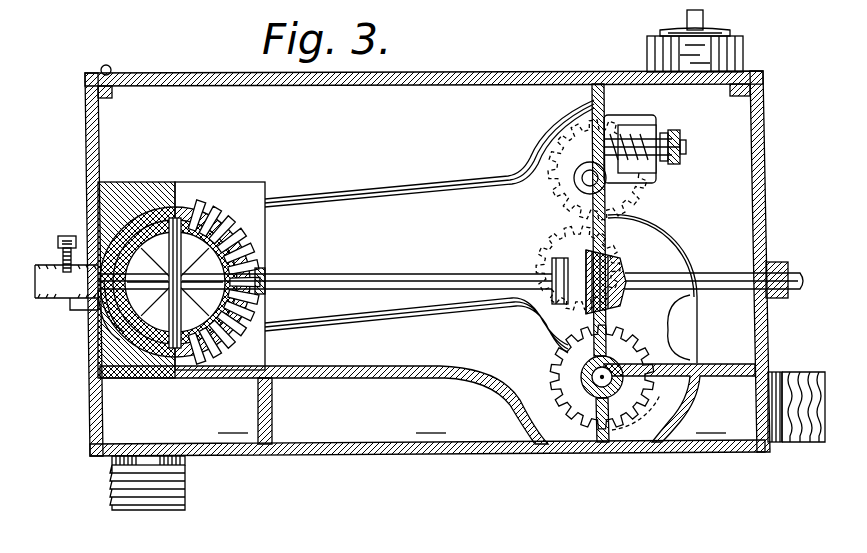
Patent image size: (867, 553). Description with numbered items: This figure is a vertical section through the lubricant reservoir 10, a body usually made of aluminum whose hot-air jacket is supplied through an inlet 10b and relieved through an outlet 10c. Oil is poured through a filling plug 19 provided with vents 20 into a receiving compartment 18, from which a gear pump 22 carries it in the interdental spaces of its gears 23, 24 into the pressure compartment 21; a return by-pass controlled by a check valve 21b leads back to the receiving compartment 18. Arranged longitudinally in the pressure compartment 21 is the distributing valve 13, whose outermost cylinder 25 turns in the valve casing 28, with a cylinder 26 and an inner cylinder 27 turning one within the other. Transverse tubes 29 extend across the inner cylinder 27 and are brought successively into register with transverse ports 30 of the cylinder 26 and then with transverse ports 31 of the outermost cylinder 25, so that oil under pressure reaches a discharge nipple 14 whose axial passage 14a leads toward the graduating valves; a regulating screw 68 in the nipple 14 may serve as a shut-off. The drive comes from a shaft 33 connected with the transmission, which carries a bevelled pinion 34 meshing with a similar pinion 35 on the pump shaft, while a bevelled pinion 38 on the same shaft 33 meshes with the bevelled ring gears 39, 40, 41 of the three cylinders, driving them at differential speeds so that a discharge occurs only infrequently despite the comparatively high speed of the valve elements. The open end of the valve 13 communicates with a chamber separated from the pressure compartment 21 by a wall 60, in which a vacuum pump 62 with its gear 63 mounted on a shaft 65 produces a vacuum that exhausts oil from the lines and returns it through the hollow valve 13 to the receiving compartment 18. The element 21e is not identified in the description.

The reservoir 10 is at (428, 75).
The inlet 10b is at (808, 446).
The outlet 10c is at (168, 507).
The distributing valve 13 is at (198, 182).
The discharge nipple 14 is at (58, 298).
The axial passage 14a is at (92, 310).
The receiving compartment 18 is at (729, 200).
The filling plug 19 is at (745, 63).
The vents 20 is at (676, 30).
The pressure compartment 21 is at (416, 330).
The check valve 21b is at (598, 170).
The adjusting screw 21e is at (680, 143).
The gear pump 22 is at (645, 237).
The pump gear 23 is at (570, 316).
The pump gear 24 is at (565, 382).
The outermost cylinder 25 is at (146, 378).
The intermediate cylinder 26 is at (162, 378).
The inner cylinder 27 is at (180, 378).
The valve casing 28 is at (128, 378).
The transverse tubes 29 is at (181, 285).
The transverse ports 30 is at (104, 330).
The transverse ports 31 is at (118, 230).
The shaft 33 is at (716, 277).
The bevelled pinion 34 is at (562, 262).
The bevelled pinion 35 is at (636, 262).
The bevelled pinion 38 is at (264, 266).
The bevelled ring gear 39 is at (224, 274).
The bevelled ring gear 40 is at (224, 274).
The bevelled ring gear 41 is at (222, 250).
The wall 60 is at (429, 158).
The vacuum pump 62 is at (530, 147).
The pump gear 63 is at (642, 197).
The shaft 65 is at (590, 192).
The regulating screw 68 is at (66, 236).